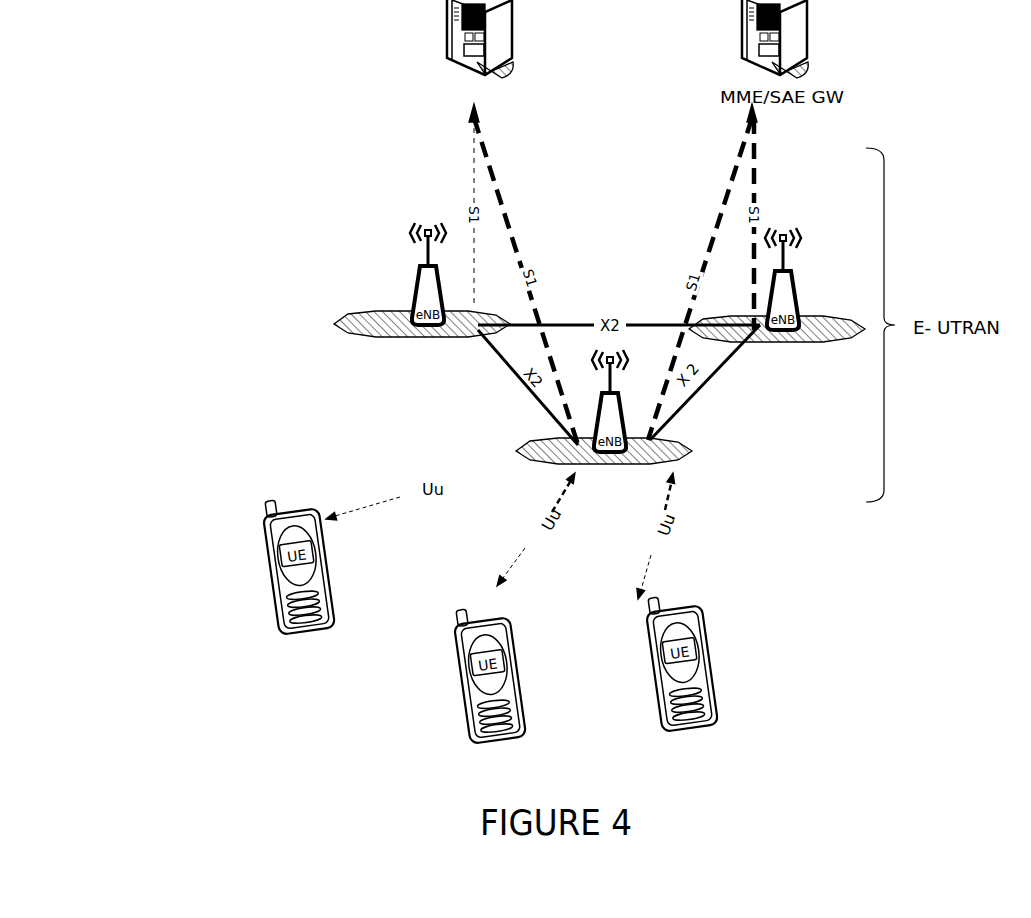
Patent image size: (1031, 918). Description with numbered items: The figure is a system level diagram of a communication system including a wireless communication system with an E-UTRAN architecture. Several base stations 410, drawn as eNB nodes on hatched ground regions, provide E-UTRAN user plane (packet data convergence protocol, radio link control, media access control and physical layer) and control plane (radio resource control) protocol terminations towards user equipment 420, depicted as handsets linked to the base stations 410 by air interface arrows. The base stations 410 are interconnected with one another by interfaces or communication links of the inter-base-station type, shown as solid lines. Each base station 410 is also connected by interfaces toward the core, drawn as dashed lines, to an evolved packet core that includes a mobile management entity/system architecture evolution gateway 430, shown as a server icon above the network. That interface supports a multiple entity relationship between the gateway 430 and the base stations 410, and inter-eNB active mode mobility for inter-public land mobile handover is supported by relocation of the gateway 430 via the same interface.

The base station 410 is at (386, 275).
The user equipment 420 is at (240, 565).
The mobile management entity/system architecture evolution gateway 430 is at (430, 26).